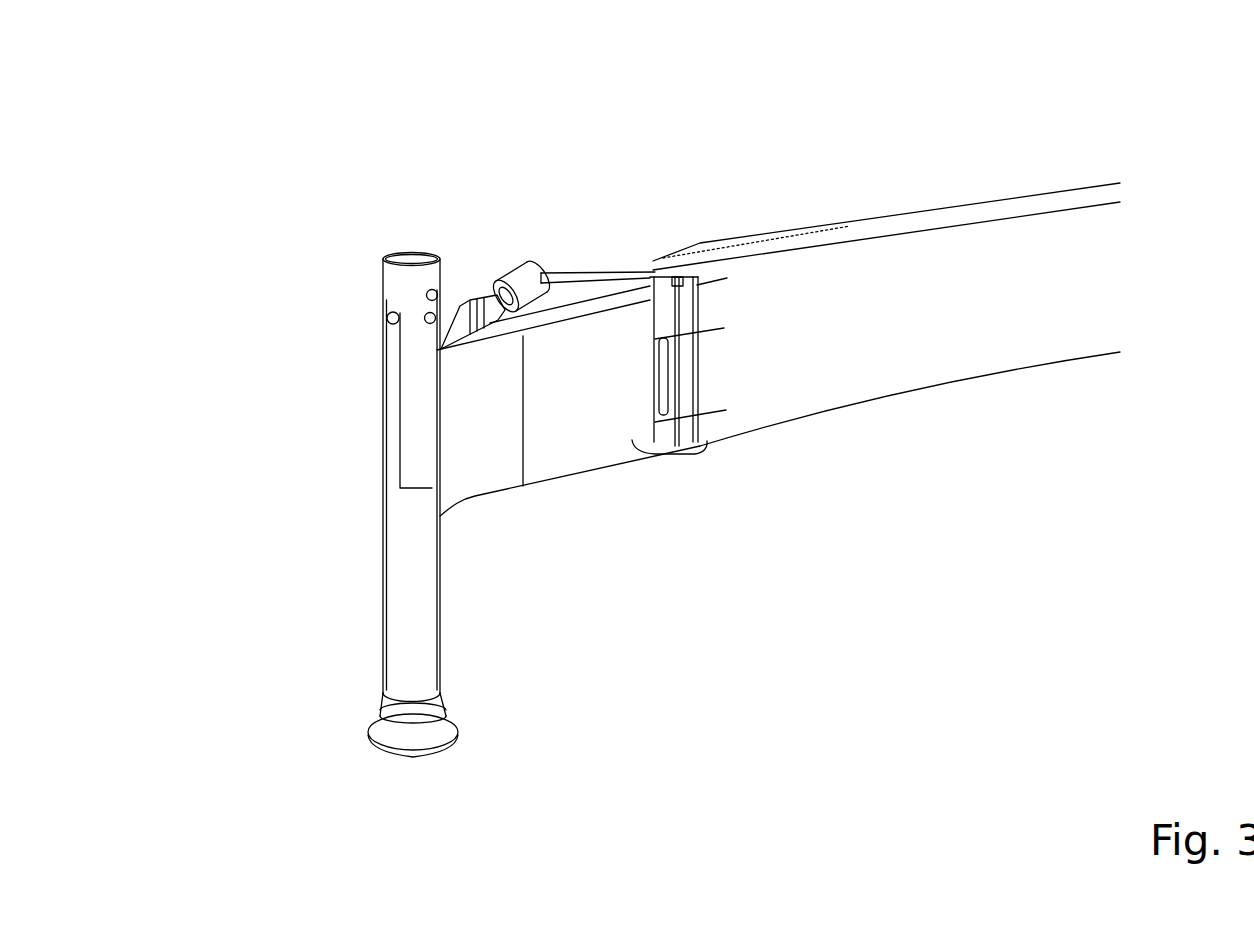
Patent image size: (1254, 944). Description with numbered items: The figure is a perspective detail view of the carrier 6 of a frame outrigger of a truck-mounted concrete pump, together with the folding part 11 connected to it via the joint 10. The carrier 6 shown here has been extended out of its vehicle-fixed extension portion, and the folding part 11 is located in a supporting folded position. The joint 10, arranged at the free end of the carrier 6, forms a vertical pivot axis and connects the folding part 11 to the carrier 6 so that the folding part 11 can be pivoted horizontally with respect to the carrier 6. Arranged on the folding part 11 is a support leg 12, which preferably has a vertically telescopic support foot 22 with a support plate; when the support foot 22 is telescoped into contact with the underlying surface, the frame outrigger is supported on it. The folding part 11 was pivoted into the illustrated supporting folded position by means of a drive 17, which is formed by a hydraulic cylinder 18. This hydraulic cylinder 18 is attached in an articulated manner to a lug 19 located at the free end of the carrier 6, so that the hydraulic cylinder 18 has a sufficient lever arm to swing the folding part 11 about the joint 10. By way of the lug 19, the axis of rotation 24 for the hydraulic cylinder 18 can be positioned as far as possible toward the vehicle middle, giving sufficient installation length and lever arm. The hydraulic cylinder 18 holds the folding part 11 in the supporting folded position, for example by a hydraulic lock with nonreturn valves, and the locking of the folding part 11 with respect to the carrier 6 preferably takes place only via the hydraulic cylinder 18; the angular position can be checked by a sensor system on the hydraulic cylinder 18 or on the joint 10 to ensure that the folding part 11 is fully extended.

The carrier 6 is at (906, 272).
The joint 10 is at (653, 261).
The folding part 11 is at (551, 421).
The support leg 12 is at (405, 536).
The drive 17 is at (522, 247).
The hydraulic cylinder 18 is at (500, 283).
The lug 19 is at (567, 267).
The support foot 22 is at (410, 742).
The axis of rotation 24 is at (538, 264).